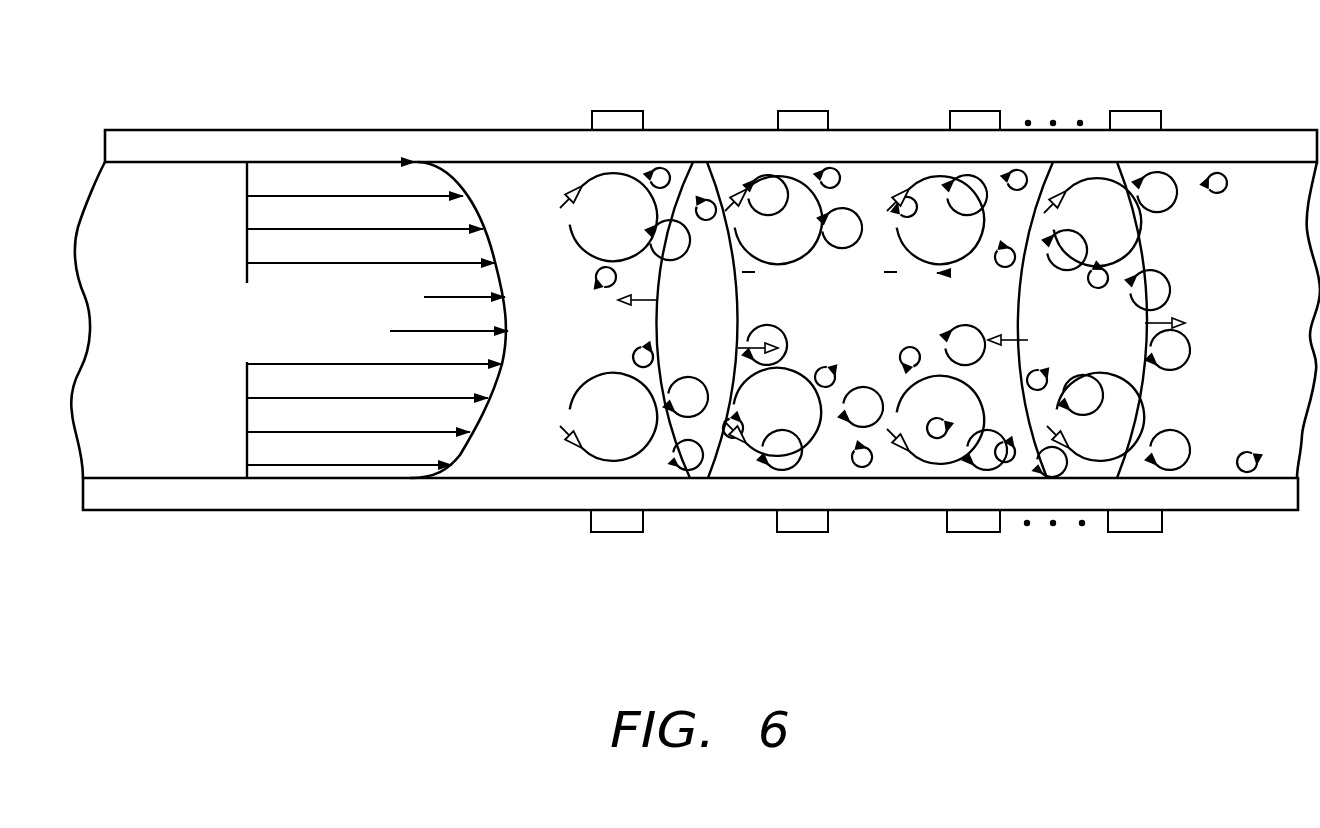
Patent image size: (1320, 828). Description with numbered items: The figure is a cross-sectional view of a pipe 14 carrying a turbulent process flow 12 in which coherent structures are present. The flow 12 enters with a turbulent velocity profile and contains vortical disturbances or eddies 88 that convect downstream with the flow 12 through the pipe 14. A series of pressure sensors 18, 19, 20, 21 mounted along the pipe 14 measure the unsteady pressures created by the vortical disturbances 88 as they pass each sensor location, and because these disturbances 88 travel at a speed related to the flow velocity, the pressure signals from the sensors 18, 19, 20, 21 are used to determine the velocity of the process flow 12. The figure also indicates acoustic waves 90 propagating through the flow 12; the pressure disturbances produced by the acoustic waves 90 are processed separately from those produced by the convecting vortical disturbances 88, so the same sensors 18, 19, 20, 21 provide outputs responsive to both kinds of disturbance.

The process flow 12 is at (518, 215).
The pipe 14 is at (1268, 130).
The pressure sensor 18 is at (617, 111).
The pressure sensor 19 is at (803, 111).
The pressure sensor 20 is at (975, 111).
The pressure sensor 21 is at (1137, 111).
The vortical disturbances 88 is at (1150, 233).
The acoustic waves 90 is at (658, 317).